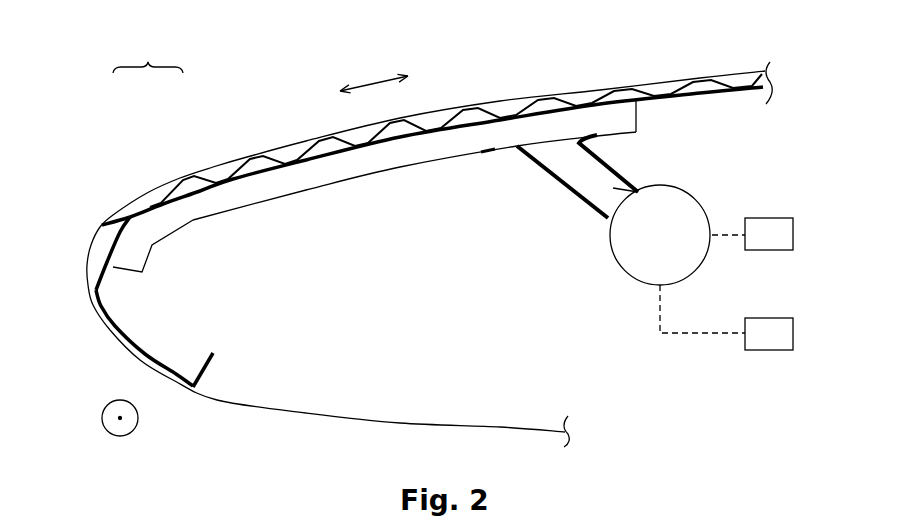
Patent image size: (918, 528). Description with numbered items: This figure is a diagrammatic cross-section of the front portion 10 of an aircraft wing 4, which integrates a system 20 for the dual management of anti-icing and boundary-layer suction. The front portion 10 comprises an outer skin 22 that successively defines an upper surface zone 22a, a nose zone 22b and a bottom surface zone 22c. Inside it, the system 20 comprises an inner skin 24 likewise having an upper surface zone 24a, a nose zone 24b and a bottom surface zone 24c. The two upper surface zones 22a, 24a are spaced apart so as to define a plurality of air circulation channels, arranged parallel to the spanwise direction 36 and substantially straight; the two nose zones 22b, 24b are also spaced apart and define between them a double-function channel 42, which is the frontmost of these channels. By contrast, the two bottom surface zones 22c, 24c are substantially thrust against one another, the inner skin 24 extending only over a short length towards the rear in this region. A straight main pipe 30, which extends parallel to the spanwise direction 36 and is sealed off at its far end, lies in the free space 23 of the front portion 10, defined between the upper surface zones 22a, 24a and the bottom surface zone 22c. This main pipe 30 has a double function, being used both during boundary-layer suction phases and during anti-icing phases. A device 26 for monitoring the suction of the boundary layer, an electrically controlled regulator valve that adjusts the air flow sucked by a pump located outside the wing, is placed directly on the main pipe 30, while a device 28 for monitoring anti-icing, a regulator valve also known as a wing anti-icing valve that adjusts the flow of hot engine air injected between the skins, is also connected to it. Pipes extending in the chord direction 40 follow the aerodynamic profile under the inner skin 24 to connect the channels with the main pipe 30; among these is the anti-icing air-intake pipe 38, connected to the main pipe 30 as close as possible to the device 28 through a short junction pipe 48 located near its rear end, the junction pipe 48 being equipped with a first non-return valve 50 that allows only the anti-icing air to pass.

The wing 4 is at (148, 58).
The front portion 10 is at (133, 152).
The system 20 is at (495, 212).
The outer skin 22 is at (413, 266).
The upper surface zone 22a is at (448, 98).
The nose zone 22b is at (80, 250).
The bottom surface zone 22c is at (371, 434).
The free space 23 is at (415, 350).
The inner skin 24 is at (429, 237).
The upper surface zone 24a is at (332, 170).
The nose zone 24b is at (117, 281).
The bottom surface zone 24c is at (165, 352).
The device for monitoring the suction of the boundary layer 26 is at (752, 234).
The device for monitoring anti-icing 28 is at (726, 317).
The main pipe 30 is at (680, 222).
The spanwise direction 36 is at (120, 419).
The anti-icing air-intake pipe 38 is at (447, 143).
The chord direction 40 is at (378, 82).
The double-function channel 42 is at (112, 240).
The junction pipe 48 is at (580, 168).
The first non-return valve 50 is at (613, 200).